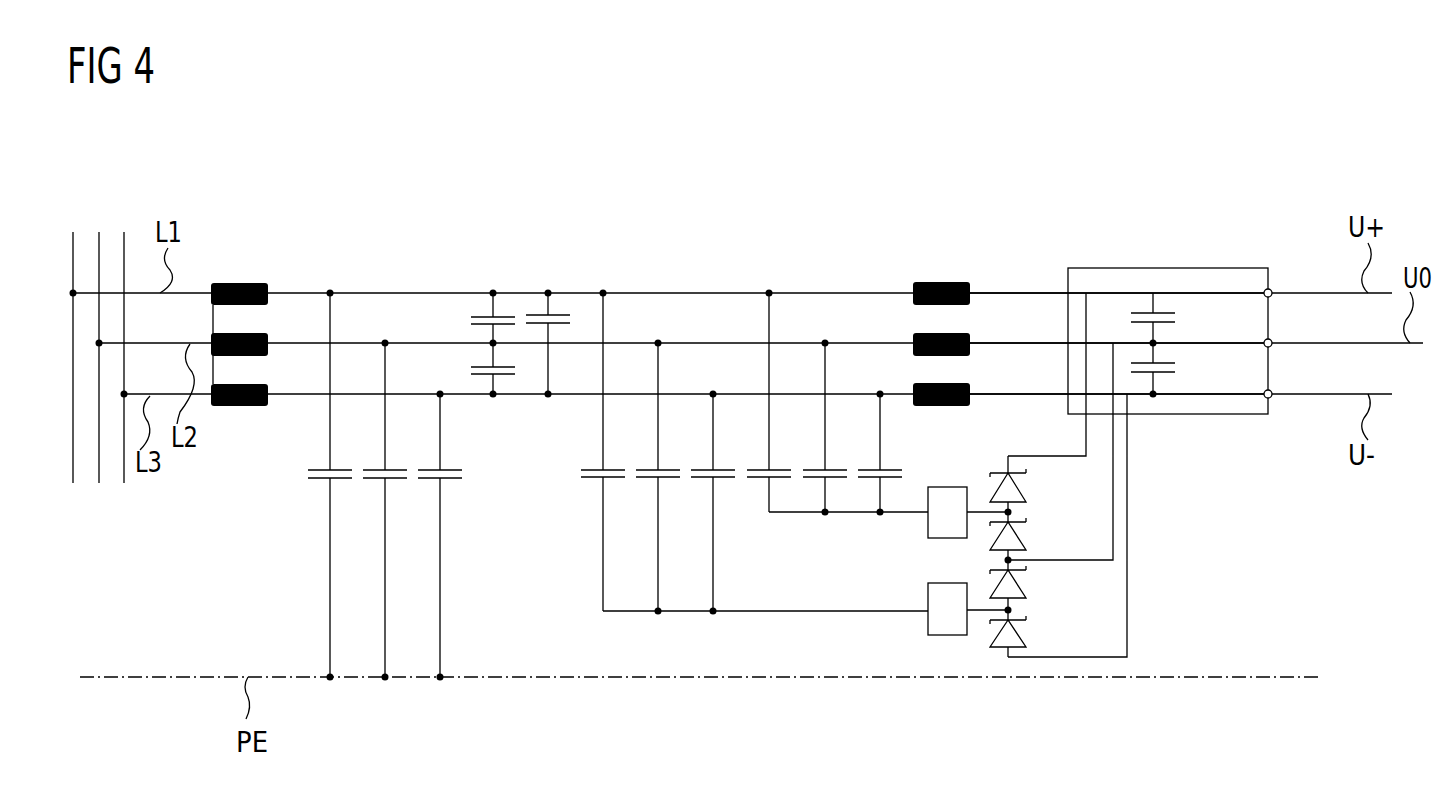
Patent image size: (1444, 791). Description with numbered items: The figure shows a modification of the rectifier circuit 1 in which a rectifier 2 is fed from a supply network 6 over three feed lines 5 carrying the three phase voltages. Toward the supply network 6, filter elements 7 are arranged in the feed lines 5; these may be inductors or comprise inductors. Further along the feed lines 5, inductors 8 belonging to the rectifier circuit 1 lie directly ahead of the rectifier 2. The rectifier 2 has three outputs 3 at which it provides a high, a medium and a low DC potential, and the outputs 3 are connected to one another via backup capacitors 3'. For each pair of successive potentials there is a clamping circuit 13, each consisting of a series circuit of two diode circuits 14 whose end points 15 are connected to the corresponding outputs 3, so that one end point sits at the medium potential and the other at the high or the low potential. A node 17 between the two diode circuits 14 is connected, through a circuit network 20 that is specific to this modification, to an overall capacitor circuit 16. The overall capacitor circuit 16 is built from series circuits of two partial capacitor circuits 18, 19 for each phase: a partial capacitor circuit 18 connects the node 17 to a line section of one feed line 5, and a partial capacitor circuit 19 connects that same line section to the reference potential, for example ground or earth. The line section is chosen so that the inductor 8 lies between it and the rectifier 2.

The rectifier circuit 1 is at (972, 228).
The rectifier 2 is at (1214, 268).
The outputs 3 is at (1343, 341).
The backup capacitors 3' is at (1168, 340).
The feed lines 5 is at (698, 292).
The supply network 6 is at (120, 206).
The filter elements 7 is at (252, 308).
The inductors 8 is at (943, 282).
The clamping circuit 13 is at (1095, 512).
The diode circuits 14 is at (1018, 486).
The end points 15 is at (1152, 293).
The overall capacitor circuit 16 is at (586, 596).
The node 17 is at (1012, 512).
The partial capacitor circuit 18 is at (594, 482).
The partial capacitor circuit 19 is at (320, 482).
The circuit network 20 is at (950, 487).